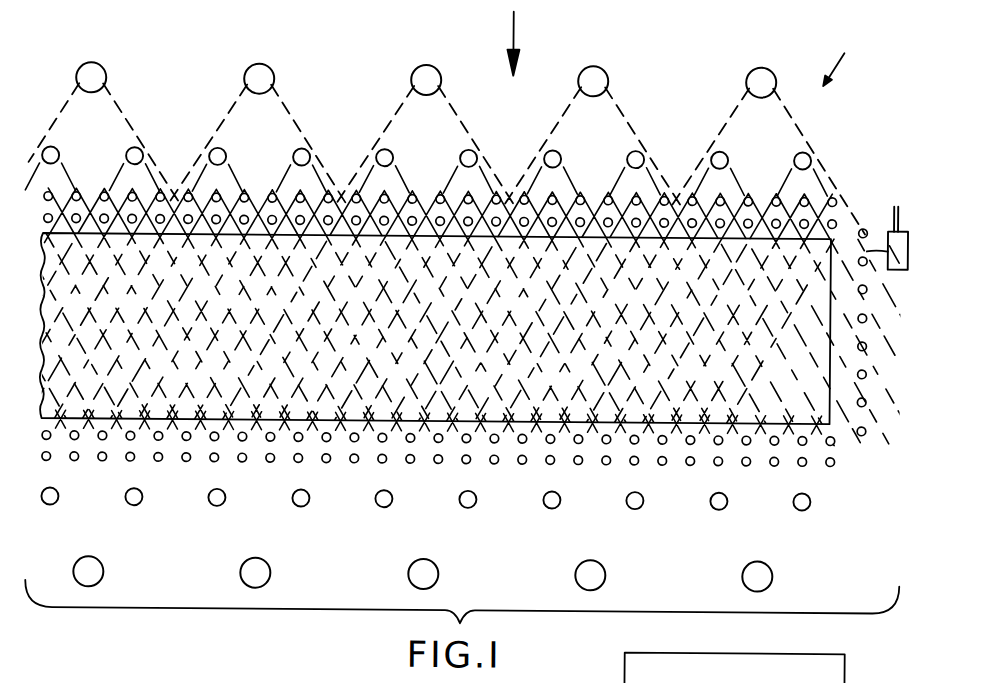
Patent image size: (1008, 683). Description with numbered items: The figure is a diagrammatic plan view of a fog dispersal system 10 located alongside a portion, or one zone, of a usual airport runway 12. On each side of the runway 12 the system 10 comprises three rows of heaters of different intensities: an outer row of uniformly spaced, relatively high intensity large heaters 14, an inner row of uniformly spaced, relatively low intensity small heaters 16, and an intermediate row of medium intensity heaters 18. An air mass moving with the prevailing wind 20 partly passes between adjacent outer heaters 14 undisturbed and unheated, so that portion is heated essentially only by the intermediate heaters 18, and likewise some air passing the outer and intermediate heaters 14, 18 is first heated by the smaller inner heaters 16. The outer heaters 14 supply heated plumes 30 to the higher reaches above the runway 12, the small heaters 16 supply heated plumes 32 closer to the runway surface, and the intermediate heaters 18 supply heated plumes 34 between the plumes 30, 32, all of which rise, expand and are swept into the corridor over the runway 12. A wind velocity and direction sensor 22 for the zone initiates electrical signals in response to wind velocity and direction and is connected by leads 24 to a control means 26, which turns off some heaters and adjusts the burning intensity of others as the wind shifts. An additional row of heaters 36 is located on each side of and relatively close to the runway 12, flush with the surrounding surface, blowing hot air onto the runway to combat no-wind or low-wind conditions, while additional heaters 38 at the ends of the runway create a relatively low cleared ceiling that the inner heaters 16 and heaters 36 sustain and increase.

The fog dispersal system 10 is at (843, 59).
The airport runway 12 is at (831, 417).
The large heaters 14 is at (105, 73).
The small heaters 16 is at (79, 192).
The medium intensity heaters 18 is at (293, 148).
The prevailing wind 20 is at (515, 20).
The wind velocity and direction sensor 22 is at (867, 245).
The leads 24 is at (904, 200).
The control means 26 is at (848, 662).
The heated plumes 30 is at (222, 111).
The heated plumes 32 is at (63, 196).
The heated plumes 34 is at (152, 162).
The heaters 36 is at (134, 214).
The heaters 38 is at (862, 222).